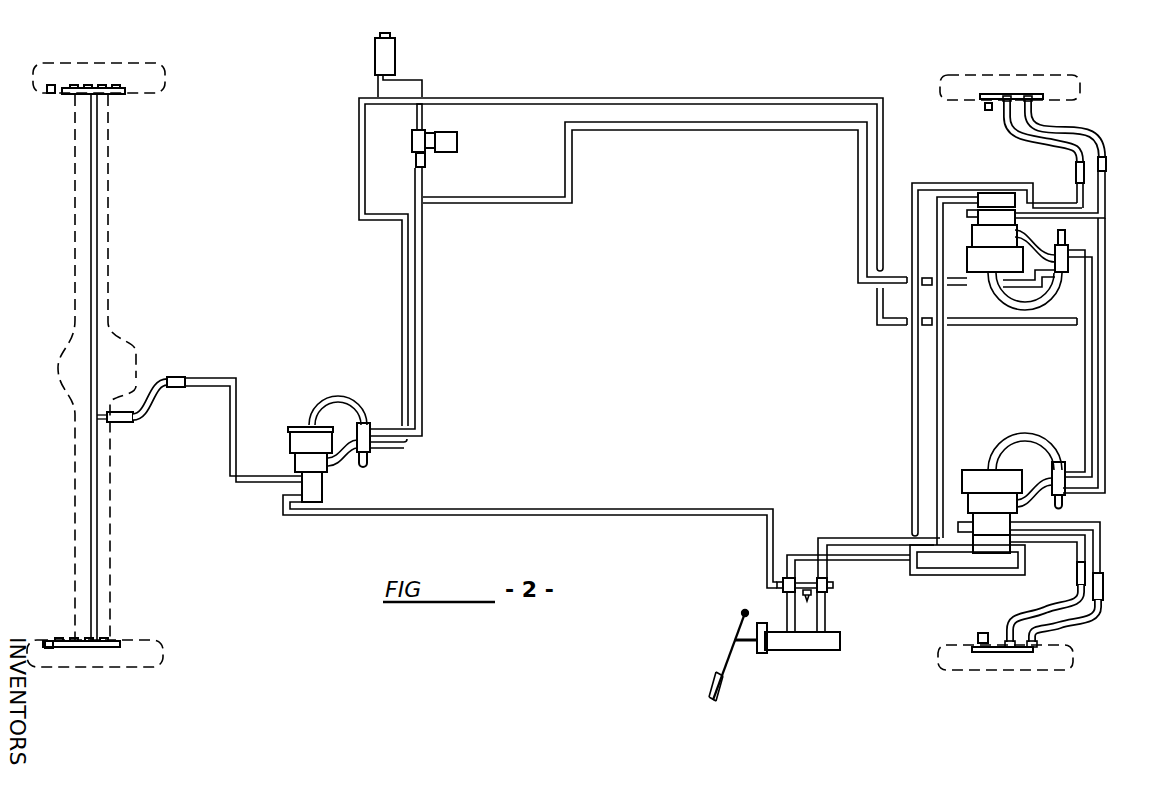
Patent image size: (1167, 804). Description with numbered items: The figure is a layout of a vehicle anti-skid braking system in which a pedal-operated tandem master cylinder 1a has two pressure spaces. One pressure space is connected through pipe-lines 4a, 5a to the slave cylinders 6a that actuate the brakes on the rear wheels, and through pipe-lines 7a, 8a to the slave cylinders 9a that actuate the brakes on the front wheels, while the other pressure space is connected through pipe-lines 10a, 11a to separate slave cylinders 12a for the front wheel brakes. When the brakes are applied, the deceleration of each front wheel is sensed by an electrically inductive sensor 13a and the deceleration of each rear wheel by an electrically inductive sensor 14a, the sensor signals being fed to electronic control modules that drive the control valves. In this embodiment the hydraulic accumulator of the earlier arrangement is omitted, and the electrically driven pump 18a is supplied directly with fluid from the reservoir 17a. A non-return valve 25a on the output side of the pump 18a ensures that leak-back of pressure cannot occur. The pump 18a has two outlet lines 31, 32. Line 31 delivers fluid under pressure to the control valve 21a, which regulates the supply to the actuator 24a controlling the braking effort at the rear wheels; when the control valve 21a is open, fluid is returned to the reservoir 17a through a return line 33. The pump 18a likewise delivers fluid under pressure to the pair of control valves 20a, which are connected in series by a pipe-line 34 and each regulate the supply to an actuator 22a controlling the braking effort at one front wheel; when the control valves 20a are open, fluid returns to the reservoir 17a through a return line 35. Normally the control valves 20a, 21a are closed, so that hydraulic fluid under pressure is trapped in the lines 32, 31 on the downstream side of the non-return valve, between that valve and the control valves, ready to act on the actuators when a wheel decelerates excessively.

The pedal-operated tandem master cylinder 1a is at (810, 642).
The pipe-line 4a is at (582, 488).
The pipe-line 5a is at (233, 453).
The slave cylinder 6a is at (127, 95).
The pipe-line 7a is at (860, 563).
The pipe-line 8a is at (912, 386).
The slave cylinder 9a is at (1010, 652).
The pipe-line 10a is at (870, 505).
The pipe-line 11a is at (938, 385).
The separate slave cylinder 12a is at (1038, 652).
The electrically inductive sensor 13a is at (985, 110).
The electrically inductive sensor 14a is at (48, 96).
The reservoir 17a is at (385, 52).
The electrically driven pump 18a is at (458, 141).
The control valve 20a is at (1063, 260).
The control valve 21a is at (367, 432).
The actuator 22a is at (987, 262).
The actuator 24a is at (302, 437).
The non-return valve 25a is at (418, 165).
The outlet line 31 is at (420, 312).
The outlet line 32 is at (688, 130).
The return line 33 is at (405, 303).
The pipe-line 34 is at (1085, 363).
The return line 35 is at (890, 323).